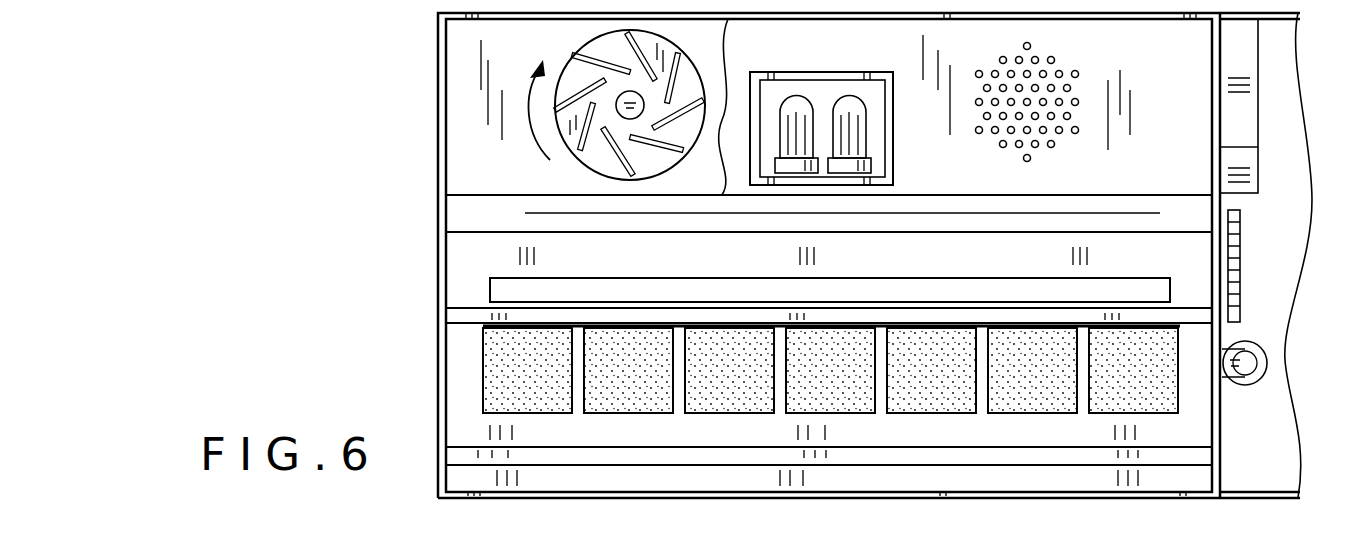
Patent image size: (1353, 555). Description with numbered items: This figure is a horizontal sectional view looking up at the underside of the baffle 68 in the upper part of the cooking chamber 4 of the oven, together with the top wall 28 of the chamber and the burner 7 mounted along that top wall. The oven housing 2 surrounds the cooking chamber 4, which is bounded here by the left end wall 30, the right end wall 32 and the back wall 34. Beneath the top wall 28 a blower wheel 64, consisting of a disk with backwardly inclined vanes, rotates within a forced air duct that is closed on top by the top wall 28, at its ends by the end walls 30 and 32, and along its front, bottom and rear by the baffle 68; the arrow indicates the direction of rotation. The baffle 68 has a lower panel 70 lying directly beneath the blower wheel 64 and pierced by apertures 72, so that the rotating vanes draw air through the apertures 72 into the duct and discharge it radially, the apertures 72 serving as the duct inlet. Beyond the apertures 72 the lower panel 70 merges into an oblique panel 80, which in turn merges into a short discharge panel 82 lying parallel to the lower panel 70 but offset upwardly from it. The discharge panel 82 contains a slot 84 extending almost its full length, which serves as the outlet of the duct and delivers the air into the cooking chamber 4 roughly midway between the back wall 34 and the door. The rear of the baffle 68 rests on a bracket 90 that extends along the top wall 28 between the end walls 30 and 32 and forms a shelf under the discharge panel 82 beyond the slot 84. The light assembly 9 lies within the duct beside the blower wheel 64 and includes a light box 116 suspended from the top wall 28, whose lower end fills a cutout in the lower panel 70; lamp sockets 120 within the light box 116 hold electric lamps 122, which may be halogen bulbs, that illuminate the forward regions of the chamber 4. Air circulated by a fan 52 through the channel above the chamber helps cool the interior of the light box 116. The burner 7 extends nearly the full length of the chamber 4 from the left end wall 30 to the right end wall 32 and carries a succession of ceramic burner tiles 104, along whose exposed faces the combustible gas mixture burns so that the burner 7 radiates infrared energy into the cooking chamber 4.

The housing 2 is at (440, 162).
The cooking chamber 4 is at (462, 66).
The gas-fired burner 7 is at (628, 425).
The light assembly 9 is at (905, 165).
The top wall 28 is at (1182, 250).
The left end wall 30 is at (440, 88).
The right end wall 32 is at (1222, 147).
The back wall 34 is at (757, 499).
The fan 52 is at (1238, 108).
The blower wheel 64 is at (572, 138).
The baffle 68 is at (462, 136).
The lower panel 70 is at (1189, 177).
The apertures 72 is at (1090, 102).
The oblique panel 80 is at (480, 222).
The discharge panel 82 is at (472, 252).
The slot 84 is at (505, 290).
The bracket 90 is at (465, 318).
The ceramic burner tiles 104 is at (500, 366).
The light box 116 is at (820, 70).
The lamp sockets 120 is at (850, 168).
The electric lamps 122 is at (850, 108).